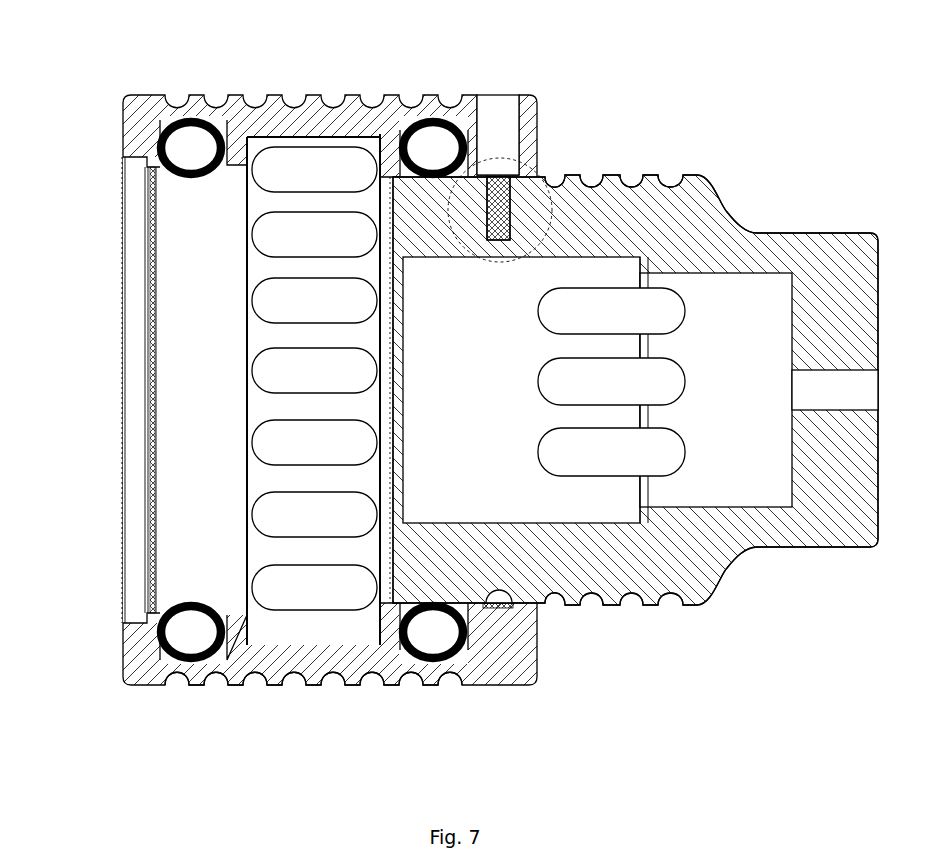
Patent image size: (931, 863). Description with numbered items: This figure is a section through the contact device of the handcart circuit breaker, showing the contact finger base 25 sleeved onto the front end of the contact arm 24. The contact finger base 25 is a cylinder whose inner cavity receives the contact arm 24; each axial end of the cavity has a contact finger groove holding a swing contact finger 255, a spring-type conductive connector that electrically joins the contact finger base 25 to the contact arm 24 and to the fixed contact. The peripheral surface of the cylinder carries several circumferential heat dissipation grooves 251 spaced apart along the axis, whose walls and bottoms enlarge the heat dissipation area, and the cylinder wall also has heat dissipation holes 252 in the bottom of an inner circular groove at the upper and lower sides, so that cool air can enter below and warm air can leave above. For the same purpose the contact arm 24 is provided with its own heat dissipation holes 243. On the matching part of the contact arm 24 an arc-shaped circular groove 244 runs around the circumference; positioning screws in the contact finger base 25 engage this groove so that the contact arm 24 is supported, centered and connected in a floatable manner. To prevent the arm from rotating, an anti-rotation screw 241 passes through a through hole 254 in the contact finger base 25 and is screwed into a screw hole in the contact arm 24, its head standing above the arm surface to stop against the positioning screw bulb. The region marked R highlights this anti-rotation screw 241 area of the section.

The contact finger base 25 is at (143, 115).
The heat dissipation groove 251 is at (353, 692).
The heat dissipation hole 252 is at (317, 302).
The through hole 254 is at (497, 127).
The swing contact finger 255 is at (437, 113).
The contact arm 24 is at (767, 260).
The anti-rotation screw 241 is at (495, 248).
The heat dissipation hole 243 is at (605, 457).
The circular groove 244 is at (503, 610).
The enlarged region R is at (540, 175).